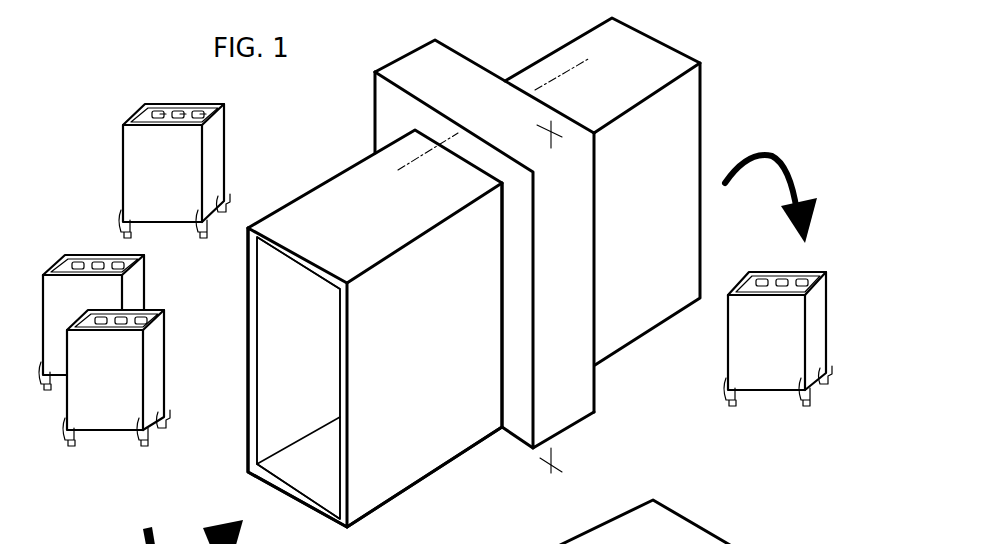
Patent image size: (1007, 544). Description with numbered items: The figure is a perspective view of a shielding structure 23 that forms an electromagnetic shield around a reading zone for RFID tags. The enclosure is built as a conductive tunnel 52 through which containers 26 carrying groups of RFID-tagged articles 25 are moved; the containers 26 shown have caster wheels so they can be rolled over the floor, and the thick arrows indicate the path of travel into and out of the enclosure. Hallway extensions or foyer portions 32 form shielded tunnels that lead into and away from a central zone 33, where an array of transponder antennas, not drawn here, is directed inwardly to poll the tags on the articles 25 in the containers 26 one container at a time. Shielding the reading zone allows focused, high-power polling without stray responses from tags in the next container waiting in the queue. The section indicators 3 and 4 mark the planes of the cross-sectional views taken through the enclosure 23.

The section line 3- 3 is at (578, 76).
The section line 4- 4 is at (531, 121).
The shielding structure 23 is at (417, 505).
The articles 25 is at (143, 105).
The containers 26 is at (216, 178).
The foyer portions 32 is at (645, 52).
The central zone 33 is at (452, 72).
The conductive tunnel 52 is at (312, 385).